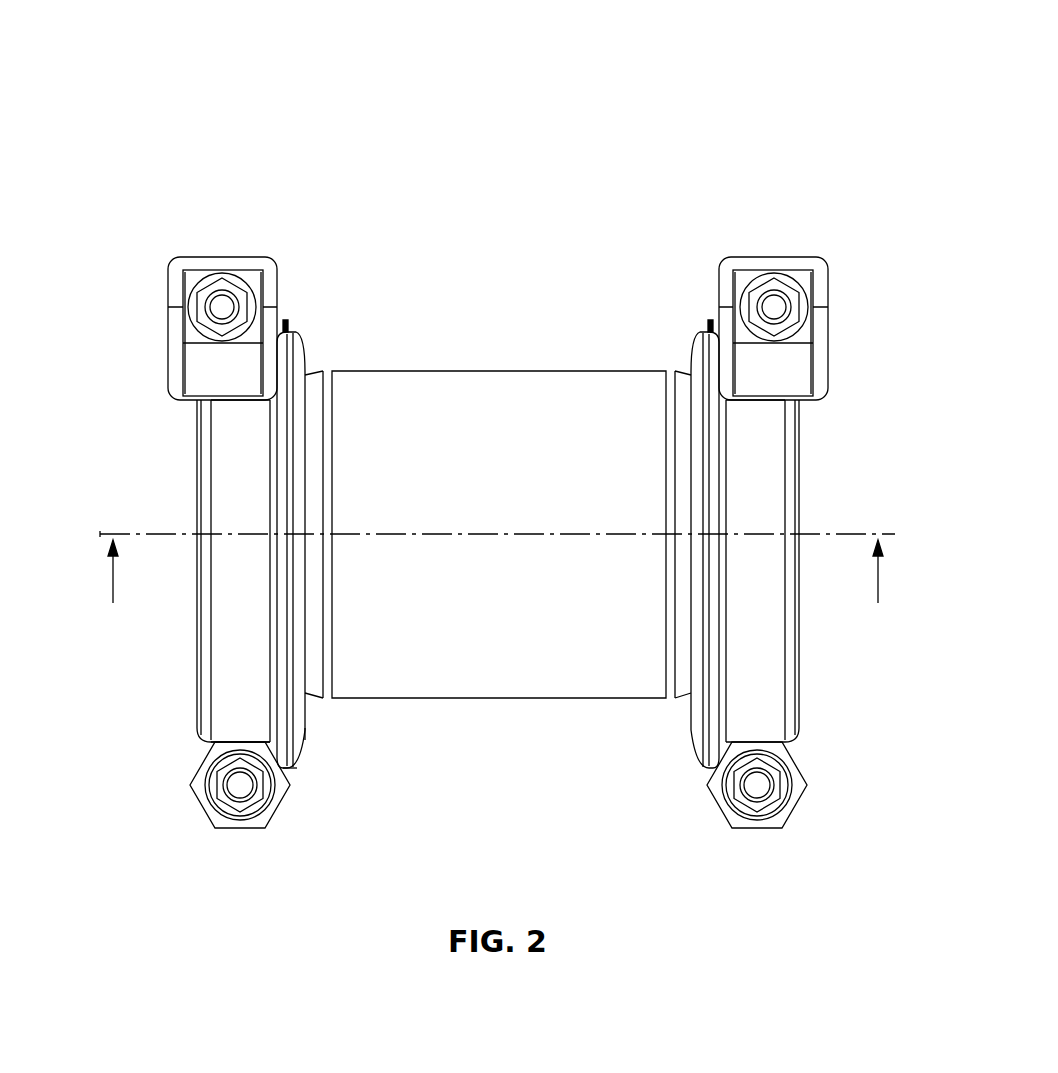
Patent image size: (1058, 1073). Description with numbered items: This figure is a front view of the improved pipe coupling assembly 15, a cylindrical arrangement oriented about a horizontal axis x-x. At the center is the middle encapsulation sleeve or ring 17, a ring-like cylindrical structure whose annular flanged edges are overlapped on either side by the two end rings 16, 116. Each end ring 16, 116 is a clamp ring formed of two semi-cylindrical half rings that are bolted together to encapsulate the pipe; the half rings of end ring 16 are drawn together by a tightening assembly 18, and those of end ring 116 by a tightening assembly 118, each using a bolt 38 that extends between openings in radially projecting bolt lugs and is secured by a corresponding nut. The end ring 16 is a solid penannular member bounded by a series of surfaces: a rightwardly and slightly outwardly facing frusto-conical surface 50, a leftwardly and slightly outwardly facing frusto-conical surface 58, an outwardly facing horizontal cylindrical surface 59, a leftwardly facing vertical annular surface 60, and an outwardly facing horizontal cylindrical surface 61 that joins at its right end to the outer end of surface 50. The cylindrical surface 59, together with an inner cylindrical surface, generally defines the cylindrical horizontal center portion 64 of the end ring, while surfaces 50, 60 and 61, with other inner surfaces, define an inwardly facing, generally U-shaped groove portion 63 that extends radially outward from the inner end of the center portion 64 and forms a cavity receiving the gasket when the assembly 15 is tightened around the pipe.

The pipe coupling assembly 15 is at (609, 112).
The end ring 16 is at (245, 842).
The end ring 116 is at (742, 842).
The middle encapsulation sleeve or ring 17 is at (500, 342).
The tightening assembly 18 is at (130, 264).
The tightening assembly 118 is at (864, 254).
The bolt 38 is at (222, 301).
The frusto-conical surface 50 is at (305, 728).
The frusto-conical surface 58 is at (197, 638).
The outwardly-facing horizontal cylindrical surface 59 is at (237, 684).
The leftwardly-facing vertical annular surface 60 is at (265, 718).
The outwardly-facing horizontal cylindrical surface 61 is at (290, 770).
The groove portion 63 is at (301, 302).
The center portion 64 is at (224, 582).